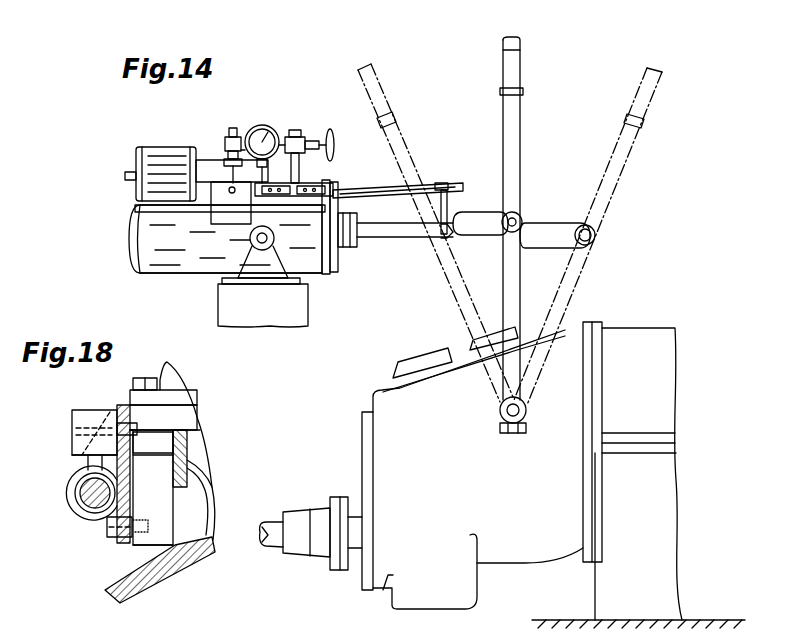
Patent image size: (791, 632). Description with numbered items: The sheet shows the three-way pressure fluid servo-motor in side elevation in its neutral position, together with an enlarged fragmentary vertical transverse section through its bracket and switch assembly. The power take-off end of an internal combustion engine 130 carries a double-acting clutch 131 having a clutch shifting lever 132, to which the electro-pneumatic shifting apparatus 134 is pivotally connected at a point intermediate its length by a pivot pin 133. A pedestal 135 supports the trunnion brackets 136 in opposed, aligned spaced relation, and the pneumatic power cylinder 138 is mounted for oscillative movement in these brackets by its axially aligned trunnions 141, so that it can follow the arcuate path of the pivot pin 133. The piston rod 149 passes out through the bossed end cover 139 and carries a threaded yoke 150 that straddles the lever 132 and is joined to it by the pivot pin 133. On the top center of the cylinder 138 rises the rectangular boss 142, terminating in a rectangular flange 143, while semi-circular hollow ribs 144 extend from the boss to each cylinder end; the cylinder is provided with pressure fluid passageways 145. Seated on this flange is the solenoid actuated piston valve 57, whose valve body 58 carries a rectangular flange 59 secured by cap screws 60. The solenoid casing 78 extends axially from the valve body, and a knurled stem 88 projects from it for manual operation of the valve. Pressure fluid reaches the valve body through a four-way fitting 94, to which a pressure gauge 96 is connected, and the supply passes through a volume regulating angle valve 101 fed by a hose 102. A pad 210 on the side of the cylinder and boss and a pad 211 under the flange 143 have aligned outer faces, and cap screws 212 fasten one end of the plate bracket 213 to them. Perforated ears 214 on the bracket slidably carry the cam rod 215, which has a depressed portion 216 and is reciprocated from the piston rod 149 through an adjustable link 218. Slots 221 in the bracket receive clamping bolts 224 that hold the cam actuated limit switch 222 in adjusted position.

In FIG. 14, the solenoid actuated piston valve 57 is at (196, 145).
In FIG. 14, the valve body 58 is at (207, 172).
In FIG. 18, the valve body 58 is at (180, 370).
In FIG. 18, the rectangular flange 59 is at (130, 392).
In FIG. 18, the cap screws 60 is at (148, 378).
In FIG. 14, the solenoid casing 78 is at (150, 152).
In FIG. 14, the knurled stem 88 is at (127, 172).
In FIG. 14, the four-way fitting 94 is at (236, 128).
In FIG. 14, the pressure gauge 96 is at (262, 125).
In FIG. 14, the pressure fluid volume regulating angle valve 101 is at (298, 130).
In FIG. 14, the hose 102 is at (318, 160).
In FIG. 14, the power take-off end of an internal combustion engine 130 is at (660, 392).
In FIG. 14, the double-acting clutch 131 is at (440, 467).
In FIG. 14, the clutch shifting lever 132 is at (622, 143).
In FIG. 14, the pivot pin 133 is at (520, 216).
In FIG. 14, the electro-pneumatic shifting apparatus 134 is at (122, 238).
In FIG. 14, the pedestal 135 is at (300, 315).
In FIG. 14, the trunnion brackets 136 is at (280, 278).
In FIG. 14, the pneumatic power cylinder 138 is at (165, 262).
In FIG. 18, the pneumatic power cylinder 138 is at (108, 586).
In FIG. 14, the bossed end cover 139 is at (335, 262).
In FIG. 14, the trunnions 141 is at (252, 232).
In FIG. 18, the rectangular boss 142 is at (200, 455).
In FIG. 18, the rectangular flange 143 is at (150, 412).
In FIG. 14, the semi-circular hollow ribs 144 is at (135, 206).
In FIG. 18, the semi-circular hollow ribs 144 is at (212, 482).
In FIG. 18, the pressure fluid passageways 145 is at (195, 516).
In FIG. 14, the piston rod 149 is at (390, 238).
In FIG. 14, the yoke 150 is at (470, 212).
In FIG. 18, the pad 210 is at (135, 548).
In FIG. 18, the pad 211 is at (150, 455).
In FIG. 18, the cap screws 212 is at (105, 533).
In FIG. 14, the plate bracket 213 is at (326, 183).
In FIG. 18, the plate bracket 213 is at (122, 405).
In FIG. 18, the perforated ears 214 is at (72, 476).
In FIG. 14, the cam rod 215 is at (397, 190).
In FIG. 18, the cam rod 215 is at (84, 500).
In FIG. 14, the depressed portion 216 is at (372, 190).
In FIG. 18, the depressed portion 216 is at (80, 492).
In FIG. 14, the link 218 is at (448, 183).
In FIG. 18, the slots 221 is at (72, 418).
In FIG. 18, the limit switch 222 is at (72, 446).
In FIG. 18, the clamping bolts 224 is at (170, 428).